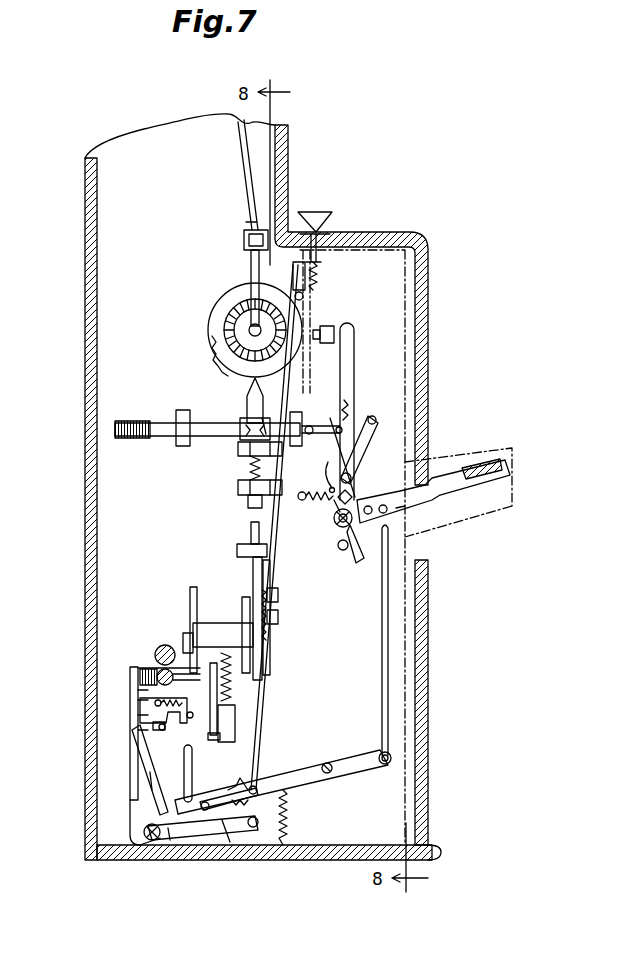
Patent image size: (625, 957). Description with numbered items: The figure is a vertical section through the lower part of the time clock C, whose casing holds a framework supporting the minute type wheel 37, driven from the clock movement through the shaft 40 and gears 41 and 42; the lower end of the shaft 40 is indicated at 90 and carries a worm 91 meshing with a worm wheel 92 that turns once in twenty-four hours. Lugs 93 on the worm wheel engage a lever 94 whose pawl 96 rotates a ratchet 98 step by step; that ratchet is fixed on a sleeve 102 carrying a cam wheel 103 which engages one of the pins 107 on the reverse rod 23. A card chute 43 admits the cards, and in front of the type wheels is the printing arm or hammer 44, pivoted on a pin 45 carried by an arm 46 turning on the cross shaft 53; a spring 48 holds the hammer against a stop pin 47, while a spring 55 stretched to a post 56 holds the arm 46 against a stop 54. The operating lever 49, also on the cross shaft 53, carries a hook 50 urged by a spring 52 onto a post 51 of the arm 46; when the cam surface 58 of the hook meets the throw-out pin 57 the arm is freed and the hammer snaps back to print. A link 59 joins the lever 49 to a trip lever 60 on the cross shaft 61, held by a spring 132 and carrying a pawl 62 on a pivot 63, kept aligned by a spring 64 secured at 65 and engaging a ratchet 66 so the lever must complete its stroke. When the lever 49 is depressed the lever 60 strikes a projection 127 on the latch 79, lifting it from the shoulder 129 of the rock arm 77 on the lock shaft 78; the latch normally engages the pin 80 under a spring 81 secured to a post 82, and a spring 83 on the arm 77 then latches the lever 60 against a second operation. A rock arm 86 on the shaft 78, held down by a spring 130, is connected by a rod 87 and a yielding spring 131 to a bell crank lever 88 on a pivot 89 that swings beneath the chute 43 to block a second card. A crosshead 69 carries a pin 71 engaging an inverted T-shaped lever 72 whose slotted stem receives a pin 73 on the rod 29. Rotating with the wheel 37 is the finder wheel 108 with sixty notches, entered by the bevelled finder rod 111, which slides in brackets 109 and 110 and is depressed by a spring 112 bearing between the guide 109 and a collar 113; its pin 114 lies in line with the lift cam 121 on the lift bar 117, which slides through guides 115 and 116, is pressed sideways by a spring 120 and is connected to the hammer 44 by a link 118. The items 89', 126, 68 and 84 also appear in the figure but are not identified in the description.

The time clock C is at (293, 140).
The shaft 40 is at (250, 182).
The bell crank lever 88 is at (263, 251).
The lower end of shaft 90 is at (251, 272).
The stem 89' is at (312, 212).
The card chute 43 is at (318, 215).
The spring 131 is at (318, 262).
The pivot 89 is at (323, 284).
The minute type wheel 37 is at (212, 330).
The gear 42 is at (232, 318).
The gear 41 is at (238, 300).
The finder wheel 108 is at (214, 352).
The finder rod 111 is at (248, 400).
The lift bar 117 is at (195, 428).
The spring 120 is at (140, 440).
The guide 115 is at (180, 446).
The pin 114 is at (240, 422).
The lift cam 121 is at (240, 428).
The pin 126 is at (264, 418).
The bracket 109 is at (240, 444).
The guide 116 is at (306, 428).
The spring 112 is at (250, 462).
The collar 113 is at (238, 486).
The bracket 110 is at (248, 500).
The link 118 is at (335, 418).
The lever 94 is at (279, 492).
The printing arm 44 is at (355, 340).
The spring 48 is at (368, 418).
The stop pin 47 is at (360, 458).
The arm 46 is at (365, 452).
The post 51 is at (352, 498).
The stop 54 is at (328, 470).
The post 56 is at (303, 500).
The spring 55 is at (322, 512).
The cross shaft 53 is at (338, 528).
The throw-out pin 57 is at (341, 551).
The cam surface 58 is at (357, 564).
The pin 45 is at (360, 490).
The hook 50 is at (400, 490).
The operating lever 49 is at (492, 468).
The spring 52 is at (392, 514).
The link 59 is at (390, 632).
The trip lever 60 is at (320, 790).
The cross shaft 61 is at (330, 762).
The lever end 68 is at (240, 782).
The pawl 96 is at (240, 560).
The rod 87 is at (265, 655).
The worm 91 is at (268, 636).
The worm wheel 92 is at (268, 668).
The lugs 93 is at (278, 618).
The sleeve 102 is at (205, 625).
The cam wheel 103 is at (192, 587).
The pins 107 is at (185, 632).
The reverse rod 23 is at (168, 646).
The pin 73 is at (152, 668).
The rod 29 is at (175, 670).
The inverted T-shaped lever 72 is at (200, 690).
The projection 127 is at (165, 735).
The pin 71 is at (212, 740).
The ratchet 98 is at (232, 722).
The crosshead 69 is at (236, 736).
The ratchet 66 is at (194, 770).
The pin 80 is at (140, 750).
The rock arm 77 is at (145, 762).
The spring 83 is at (150, 780).
The arm 84 is at (145, 668).
The spring 81 is at (140, 685).
The post 82 is at (140, 698).
The latch 79 is at (140, 712).
The shoulder 129 is at (140, 728).
The lock shaft 78 is at (145, 840).
The pawl 62 is at (200, 834).
The rock arm 86 is at (175, 836).
The pivot 63 is at (215, 835).
The spring 130 is at (228, 830).
The spring 64 is at (245, 812).
The spring securing point 65 is at (262, 800).
The spring 132 is at (288, 826).